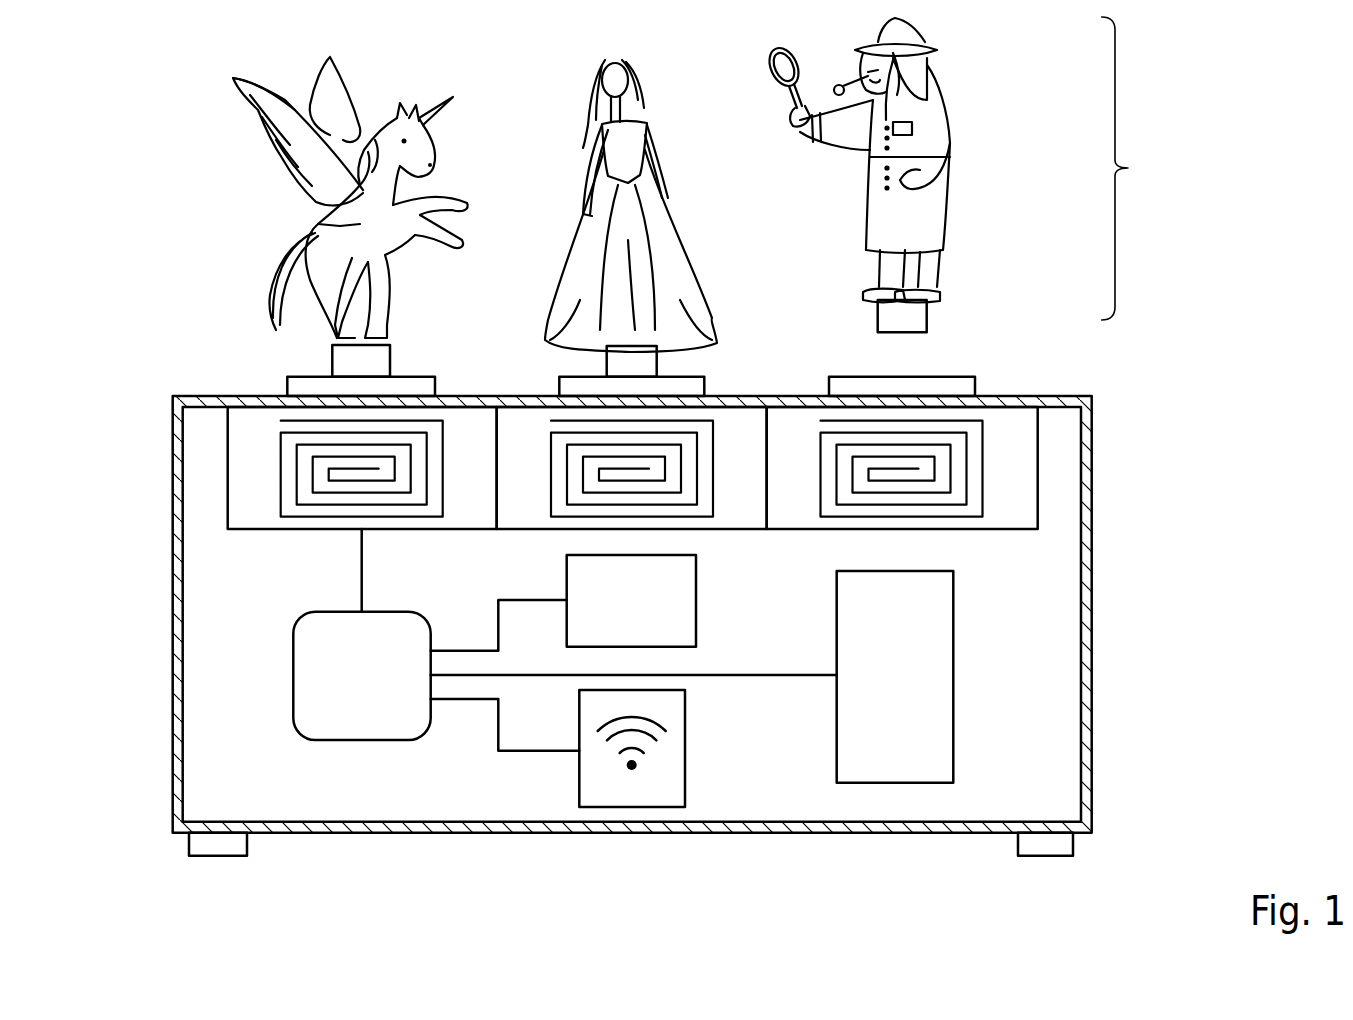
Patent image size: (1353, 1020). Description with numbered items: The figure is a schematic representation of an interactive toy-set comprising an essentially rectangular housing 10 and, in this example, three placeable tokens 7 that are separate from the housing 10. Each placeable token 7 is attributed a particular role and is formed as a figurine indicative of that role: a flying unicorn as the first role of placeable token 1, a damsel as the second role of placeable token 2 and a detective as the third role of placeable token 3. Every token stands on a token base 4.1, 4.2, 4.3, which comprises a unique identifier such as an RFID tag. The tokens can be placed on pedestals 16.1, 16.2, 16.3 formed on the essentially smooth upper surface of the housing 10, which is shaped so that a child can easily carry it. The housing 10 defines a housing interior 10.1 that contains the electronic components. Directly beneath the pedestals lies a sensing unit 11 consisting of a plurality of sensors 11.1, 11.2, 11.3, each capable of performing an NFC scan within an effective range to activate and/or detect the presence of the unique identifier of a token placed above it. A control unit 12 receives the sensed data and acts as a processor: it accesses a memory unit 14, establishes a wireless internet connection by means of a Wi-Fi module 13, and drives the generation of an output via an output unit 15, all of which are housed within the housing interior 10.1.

The first role of placeable token 1 is at (335, 232).
The second role of placeable token 2 is at (663, 220).
The third role of placeable token 3 is at (930, 110).
The token base 4.1 is at (352, 363).
The token base 4.2 is at (620, 363).
The token base 4.3 is at (912, 317).
The placeable tokens 7 is at (1130, 168).
The housing 10 is at (1088, 582).
The housing interior 10.1 is at (1026, 668).
The sensing unit 11 is at (642, 661).
The sensor 11.1 is at (255, 477).
The sensor 11.2 is at (747, 482).
The sensor 11.3 is at (1007, 443).
The control unit 12 is at (362, 688).
The Wi-Fi module 13 is at (657, 785).
The memory unit 14 is at (600, 597).
The output unit 15 is at (902, 698).
The pedestal 16.1 is at (317, 388).
The pedestal 16.2 is at (690, 388).
The pedestal 16.3 is at (958, 388).